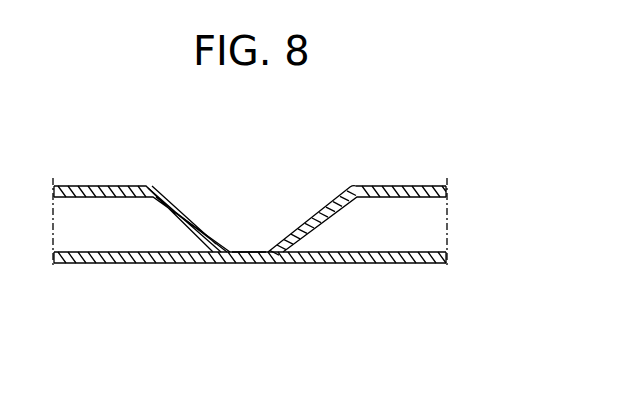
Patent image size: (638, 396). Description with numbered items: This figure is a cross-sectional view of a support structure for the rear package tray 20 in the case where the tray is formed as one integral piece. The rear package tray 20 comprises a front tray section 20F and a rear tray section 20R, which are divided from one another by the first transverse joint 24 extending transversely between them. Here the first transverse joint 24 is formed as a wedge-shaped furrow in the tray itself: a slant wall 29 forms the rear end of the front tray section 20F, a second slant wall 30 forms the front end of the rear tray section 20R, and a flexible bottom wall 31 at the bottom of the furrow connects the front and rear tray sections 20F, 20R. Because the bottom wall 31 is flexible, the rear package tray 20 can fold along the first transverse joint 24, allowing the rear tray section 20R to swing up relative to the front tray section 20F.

The rear package tray 20 is at (250, 283).
The front tray section 20F is at (147, 265).
The rear tray section 20R is at (338, 265).
The first transverse joint 24 is at (373, 148).
The slant wall 29 is at (170, 202).
The slant wall 30 is at (330, 200).
The flexible bottom wall 31 is at (247, 250).